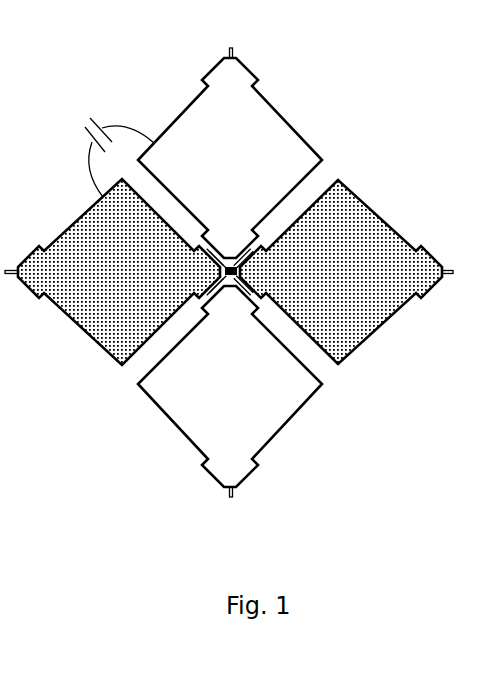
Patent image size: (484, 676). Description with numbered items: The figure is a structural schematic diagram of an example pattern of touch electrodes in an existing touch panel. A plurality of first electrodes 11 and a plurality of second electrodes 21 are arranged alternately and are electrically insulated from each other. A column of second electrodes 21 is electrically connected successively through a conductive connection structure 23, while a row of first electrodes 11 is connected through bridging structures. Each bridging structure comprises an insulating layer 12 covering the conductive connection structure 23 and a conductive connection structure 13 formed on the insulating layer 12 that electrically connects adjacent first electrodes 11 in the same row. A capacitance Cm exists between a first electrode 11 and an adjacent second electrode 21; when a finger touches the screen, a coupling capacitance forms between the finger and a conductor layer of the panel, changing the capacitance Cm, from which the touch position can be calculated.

The first electrode 11 is at (230, 272).
The second electrode 21 is at (230, 272).
The insulating layer 12 is at (258, 299).
The conductive connection structure 13 is at (203, 298).
The conductive connection structure 23 is at (233, 50).
The capacitance Cm is at (102, 150).